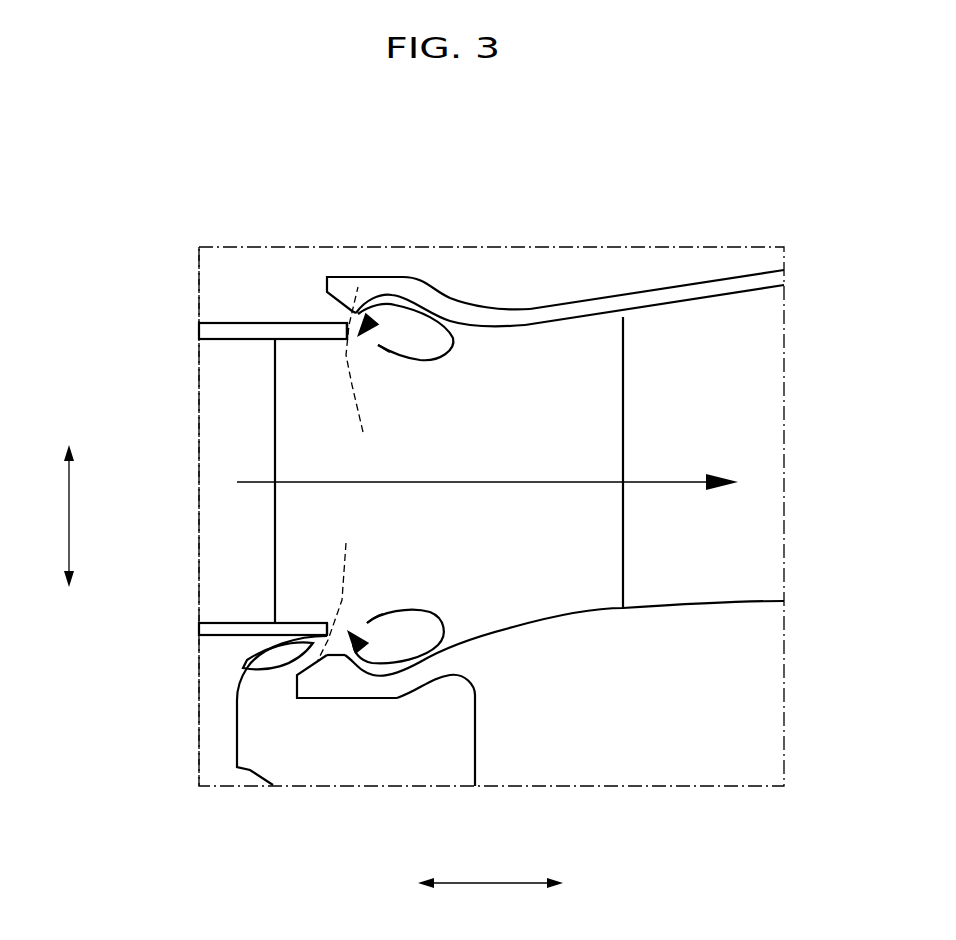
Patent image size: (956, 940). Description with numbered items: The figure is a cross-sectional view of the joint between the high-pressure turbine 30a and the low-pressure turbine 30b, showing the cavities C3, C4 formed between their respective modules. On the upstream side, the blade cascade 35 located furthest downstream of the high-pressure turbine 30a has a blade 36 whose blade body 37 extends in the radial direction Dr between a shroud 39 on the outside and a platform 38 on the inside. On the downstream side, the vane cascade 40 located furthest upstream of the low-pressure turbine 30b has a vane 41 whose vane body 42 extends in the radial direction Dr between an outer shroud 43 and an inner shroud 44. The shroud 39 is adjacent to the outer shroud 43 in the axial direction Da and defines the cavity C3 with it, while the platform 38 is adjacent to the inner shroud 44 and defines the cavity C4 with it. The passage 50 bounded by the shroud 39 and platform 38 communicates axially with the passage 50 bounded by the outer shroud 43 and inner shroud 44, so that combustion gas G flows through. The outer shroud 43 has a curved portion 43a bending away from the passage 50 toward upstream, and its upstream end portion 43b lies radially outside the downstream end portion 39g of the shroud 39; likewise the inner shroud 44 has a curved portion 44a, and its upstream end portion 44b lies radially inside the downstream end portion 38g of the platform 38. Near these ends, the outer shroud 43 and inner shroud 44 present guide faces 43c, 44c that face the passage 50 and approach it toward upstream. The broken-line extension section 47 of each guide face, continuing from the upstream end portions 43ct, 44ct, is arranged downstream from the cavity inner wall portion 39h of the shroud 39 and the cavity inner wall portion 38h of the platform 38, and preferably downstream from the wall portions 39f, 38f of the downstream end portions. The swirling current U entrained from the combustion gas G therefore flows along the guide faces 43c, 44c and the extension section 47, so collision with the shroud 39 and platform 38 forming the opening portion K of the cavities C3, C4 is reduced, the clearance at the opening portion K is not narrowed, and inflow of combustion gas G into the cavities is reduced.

The high-pressure turbine 30a is at (216, 304).
The low-pressure turbine 30b is at (502, 272).
The blade cascade 35 is at (256, 313).
The blade 36 is at (233, 518).
The blade body 37 is at (223, 405).
The platform 38 is at (220, 625).
The wall portion 38f is at (338, 652).
The downstream end portion 38g is at (325, 621).
The cavity inner wall portion 38h is at (300, 640).
The shroud 39 is at (235, 332).
The wall portion 39f is at (357, 310).
The downstream end portion 39g is at (338, 340).
The cavity inner wall portion 39h is at (327, 321).
The vane cascade 40 is at (711, 272).
The vane 41 is at (748, 533).
The vane body 42 is at (753, 397).
The outer shroud 43 is at (500, 326).
The curved portion 43a is at (412, 290).
The upstream end portion 43b is at (367, 283).
The guide face 43c is at (397, 357).
The upstream end portion 43ct is at (378, 345).
The inner shroud 44 is at (512, 626).
The curved portion 44a is at (400, 698).
The upstream end portion 44b is at (340, 692).
The guide face 44c is at (363, 660).
The upstream end portion 44ct is at (365, 627).
The extension section 47 is at (348, 473).
The passage 50 is at (587, 352).
The opening portion K is at (347, 357).
The swirling current U is at (453, 340).
The combustion gas G is at (476, 483).
The radial direction Dr is at (53, 516).
The axial direction Da is at (490, 901).
The cavity C3 is at (300, 303).
The cavity C4 is at (283, 717).